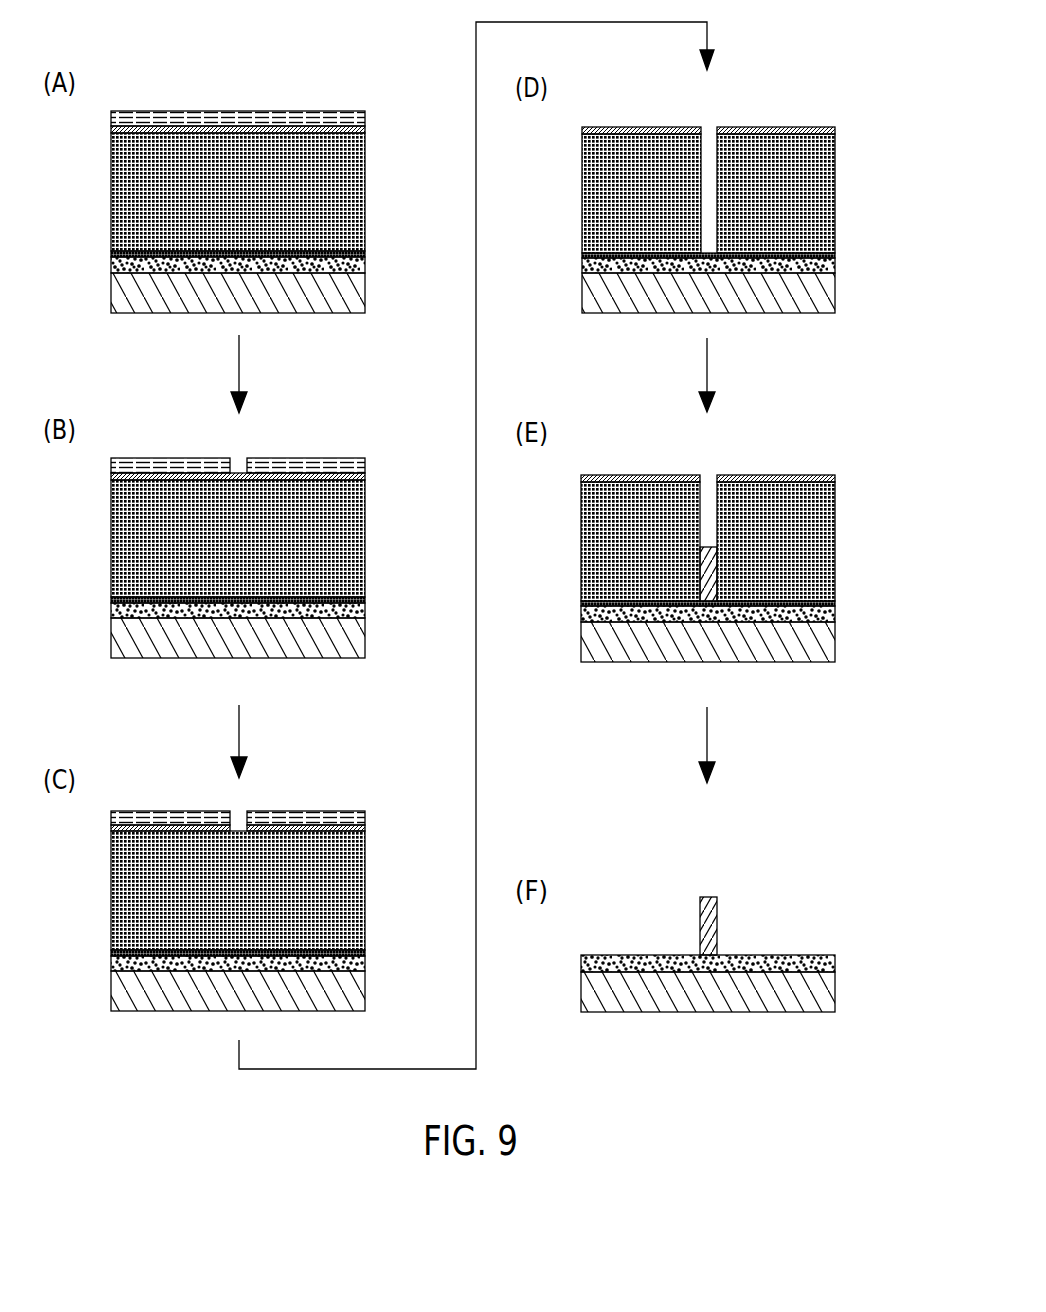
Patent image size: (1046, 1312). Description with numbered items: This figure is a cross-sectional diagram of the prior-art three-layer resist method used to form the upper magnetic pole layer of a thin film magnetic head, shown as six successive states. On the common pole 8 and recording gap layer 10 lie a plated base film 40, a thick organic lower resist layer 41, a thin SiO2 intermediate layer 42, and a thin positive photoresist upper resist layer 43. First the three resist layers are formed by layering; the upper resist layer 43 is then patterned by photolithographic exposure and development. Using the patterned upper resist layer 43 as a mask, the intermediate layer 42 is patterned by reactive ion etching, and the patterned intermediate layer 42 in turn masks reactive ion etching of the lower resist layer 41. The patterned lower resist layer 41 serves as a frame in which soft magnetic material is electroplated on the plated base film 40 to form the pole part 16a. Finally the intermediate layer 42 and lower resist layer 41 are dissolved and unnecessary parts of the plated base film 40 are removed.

The common pole 8 is at (111, 292).
The recording gap layer 10 is at (111, 265).
The pole part 16a is at (710, 547).
The plated base film 40 is at (365, 254).
The lower resist layer 41 is at (365, 181).
The intermediate layer 42 is at (111, 130).
The upper resist layer 43 is at (313, 111).